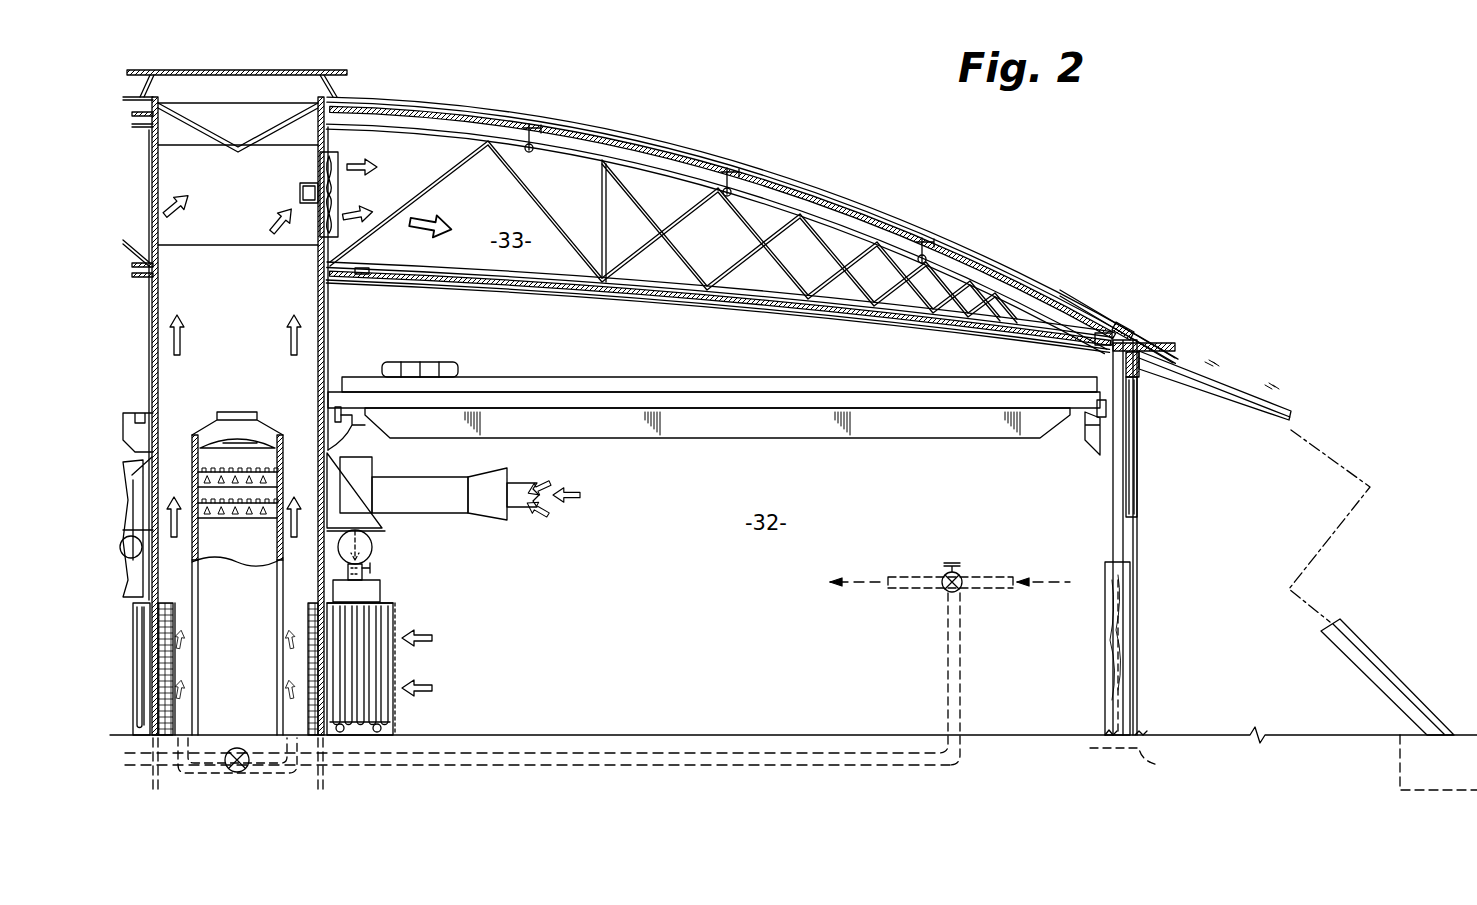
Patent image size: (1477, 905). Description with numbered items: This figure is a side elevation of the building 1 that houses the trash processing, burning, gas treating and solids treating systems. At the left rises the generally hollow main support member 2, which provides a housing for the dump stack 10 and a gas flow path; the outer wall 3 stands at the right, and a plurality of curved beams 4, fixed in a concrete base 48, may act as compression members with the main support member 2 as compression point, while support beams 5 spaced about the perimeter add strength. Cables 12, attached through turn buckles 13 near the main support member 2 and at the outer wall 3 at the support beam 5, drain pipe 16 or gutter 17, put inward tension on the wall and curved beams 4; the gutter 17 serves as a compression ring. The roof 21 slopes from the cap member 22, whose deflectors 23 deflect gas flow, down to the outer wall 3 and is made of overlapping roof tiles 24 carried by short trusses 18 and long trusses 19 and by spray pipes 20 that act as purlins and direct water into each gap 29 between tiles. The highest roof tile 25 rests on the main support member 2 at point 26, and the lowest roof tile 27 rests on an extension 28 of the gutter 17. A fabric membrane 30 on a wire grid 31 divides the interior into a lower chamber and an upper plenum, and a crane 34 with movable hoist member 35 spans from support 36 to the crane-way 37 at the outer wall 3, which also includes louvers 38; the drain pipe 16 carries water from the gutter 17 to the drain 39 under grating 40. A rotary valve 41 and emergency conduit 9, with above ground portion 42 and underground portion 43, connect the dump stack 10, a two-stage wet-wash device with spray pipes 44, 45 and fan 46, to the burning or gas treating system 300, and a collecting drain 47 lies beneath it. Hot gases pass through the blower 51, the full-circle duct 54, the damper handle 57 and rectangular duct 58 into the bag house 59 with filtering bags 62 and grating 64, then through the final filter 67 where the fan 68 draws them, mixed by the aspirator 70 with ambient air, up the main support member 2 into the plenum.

The building 1 is at (1126, 227).
The main support member 2 is at (325, 338).
The outer wall 3 is at (1138, 606).
The curved beams 4 is at (1294, 412).
The support beams 5 is at (1130, 576).
The emergency conduit 9 is at (962, 744).
The dump stack 10 is at (195, 435).
The cables 12 is at (822, 311).
The turn buckles 13 is at (362, 276).
The drain pipe 16 is at (1120, 543).
The gutter 17 is at (1182, 356).
The short trusses 18 is at (638, 204).
The long trusses 19 is at (545, 220).
The spray pipes 20 is at (533, 152).
The roof 21 is at (701, 124).
The cap member 22 is at (305, 70).
The deflectors 23 is at (282, 125).
The roof tiles 24 is at (462, 108).
The highest roof tile 25 is at (402, 102).
The point 26 is at (345, 110).
The lowest roof tile 27 is at (1052, 287).
The extension 28 is at (1132, 327).
The gap 29 is at (536, 126).
The fabric membrane 30 is at (900, 324).
The wire grid 31 is at (851, 318).
The crane 34 is at (896, 438).
The movable hoist member 35 is at (448, 362).
The support 36 is at (360, 432).
The crane-way 37 is at (1090, 432).
The louvers 38 is at (1140, 375).
The drain 39 is at (1155, 764).
The grating 40 is at (1145, 733).
The rotary valve 41 is at (958, 576).
The above ground portion 42 is at (962, 664).
The underground portion 43 is at (728, 766).
The spray pipe 44 is at (270, 482).
The spray pipe 45 is at (260, 518).
The fan 46 is at (258, 440).
The collecting drain 47 is at (283, 774).
The concrete base 48 is at (1400, 765).
The blower 51 is at (373, 466).
The 360° duct 54 is at (373, 547).
The handle 57 is at (370, 570).
The rectangular duct 58 is at (380, 589).
The bag house 59 is at (395, 604).
The filtering bags 62 is at (390, 660).
The grating 64 is at (396, 705).
The final filter 67 is at (312, 696).
The fan 68 is at (338, 210).
The aspirator 70 is at (452, 474).
The gas treating system 300 is at (510, 522).